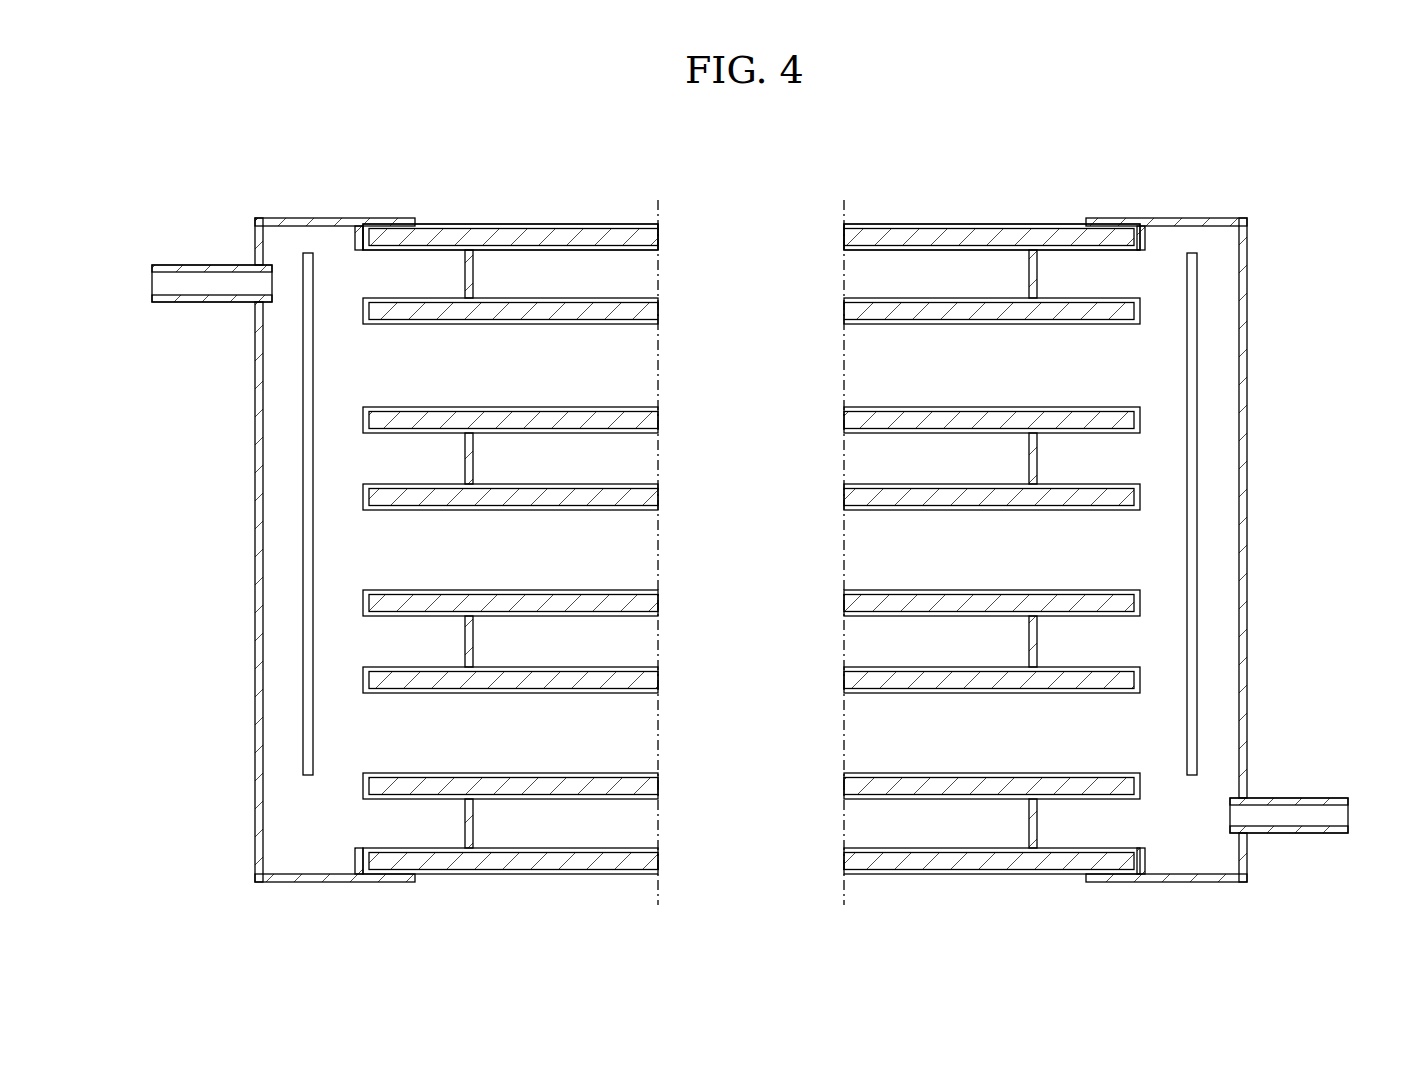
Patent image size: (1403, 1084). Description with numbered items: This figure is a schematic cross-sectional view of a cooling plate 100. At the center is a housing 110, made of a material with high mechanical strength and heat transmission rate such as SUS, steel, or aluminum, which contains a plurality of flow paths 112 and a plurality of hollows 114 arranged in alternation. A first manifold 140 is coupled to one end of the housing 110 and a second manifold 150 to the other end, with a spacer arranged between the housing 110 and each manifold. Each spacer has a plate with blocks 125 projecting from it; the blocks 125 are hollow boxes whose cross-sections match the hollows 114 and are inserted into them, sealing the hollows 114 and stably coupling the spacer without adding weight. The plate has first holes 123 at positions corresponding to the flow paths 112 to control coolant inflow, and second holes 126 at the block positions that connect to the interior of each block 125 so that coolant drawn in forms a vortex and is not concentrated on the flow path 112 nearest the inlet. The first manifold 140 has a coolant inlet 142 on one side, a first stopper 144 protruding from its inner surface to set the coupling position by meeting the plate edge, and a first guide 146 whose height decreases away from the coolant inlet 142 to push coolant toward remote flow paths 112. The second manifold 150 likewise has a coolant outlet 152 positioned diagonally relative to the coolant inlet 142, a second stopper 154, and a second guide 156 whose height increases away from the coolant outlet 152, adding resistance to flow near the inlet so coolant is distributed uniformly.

The cooling plate 100 is at (1275, 172).
The housing 110 is at (558, 235).
The flow path 112 is at (878, 368).
The hollow 114 is at (878, 463).
The first hole 123 is at (374, 364).
The block 125 is at (440, 248).
The second hole 126 is at (374, 458).
The first manifold 140 is at (258, 570).
The coolant inlet 142 is at (197, 265).
The first stopper 144 is at (357, 238).
The first guide 146 is at (305, 715).
The second manifold 150 is at (1247, 412).
The coolant outlet 152 is at (1300, 797).
The second stopper 154 is at (1148, 238).
The second guide 156 is at (1197, 335).